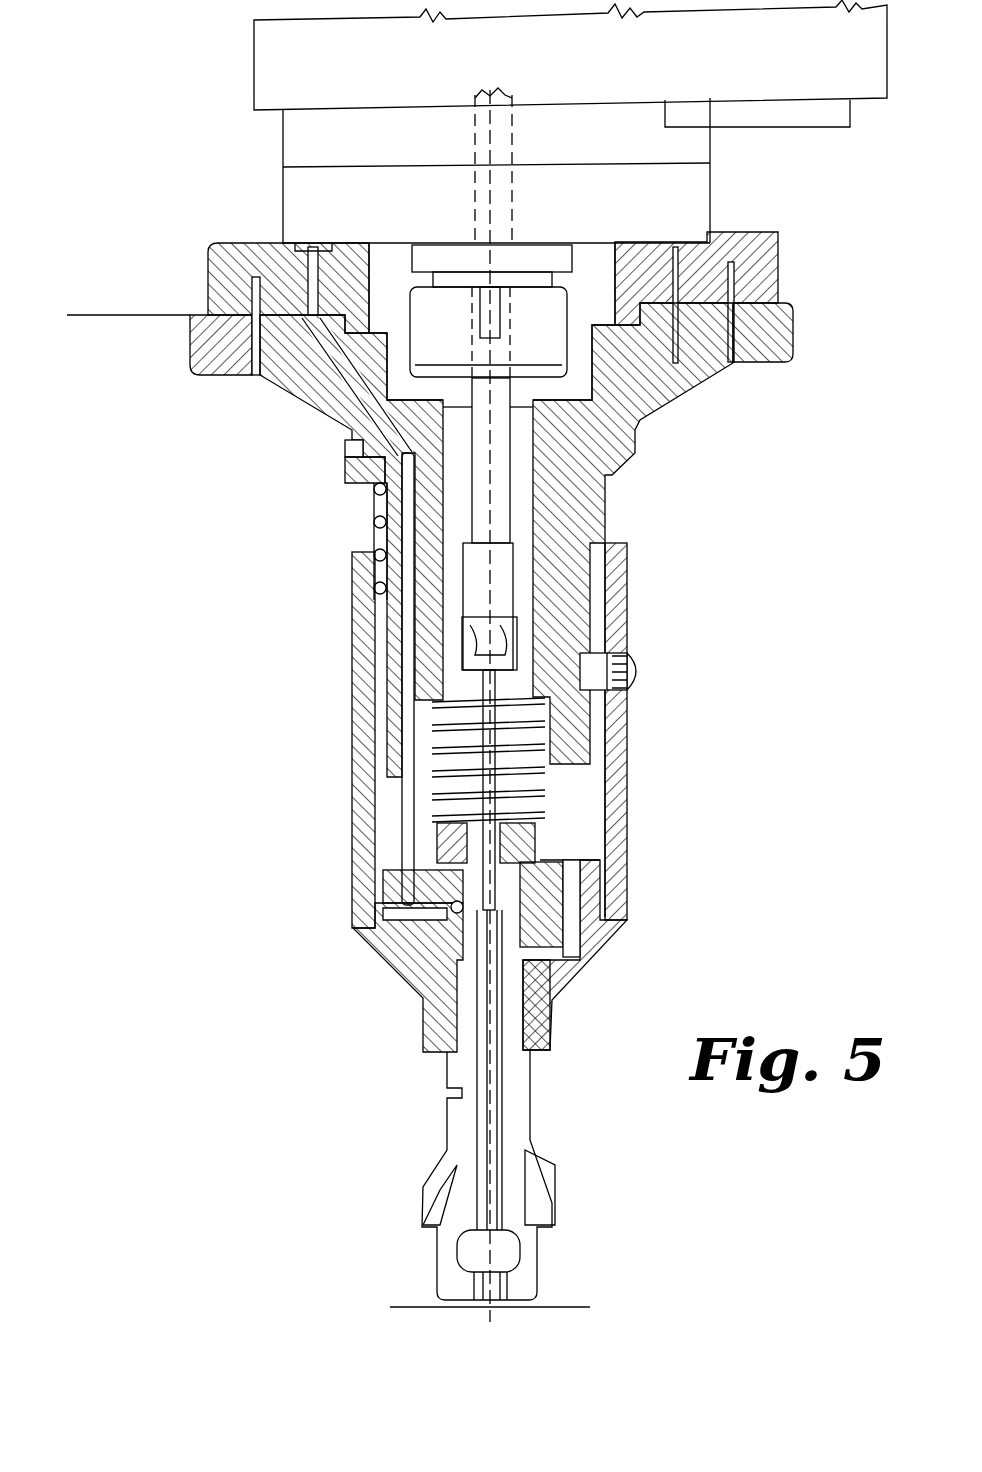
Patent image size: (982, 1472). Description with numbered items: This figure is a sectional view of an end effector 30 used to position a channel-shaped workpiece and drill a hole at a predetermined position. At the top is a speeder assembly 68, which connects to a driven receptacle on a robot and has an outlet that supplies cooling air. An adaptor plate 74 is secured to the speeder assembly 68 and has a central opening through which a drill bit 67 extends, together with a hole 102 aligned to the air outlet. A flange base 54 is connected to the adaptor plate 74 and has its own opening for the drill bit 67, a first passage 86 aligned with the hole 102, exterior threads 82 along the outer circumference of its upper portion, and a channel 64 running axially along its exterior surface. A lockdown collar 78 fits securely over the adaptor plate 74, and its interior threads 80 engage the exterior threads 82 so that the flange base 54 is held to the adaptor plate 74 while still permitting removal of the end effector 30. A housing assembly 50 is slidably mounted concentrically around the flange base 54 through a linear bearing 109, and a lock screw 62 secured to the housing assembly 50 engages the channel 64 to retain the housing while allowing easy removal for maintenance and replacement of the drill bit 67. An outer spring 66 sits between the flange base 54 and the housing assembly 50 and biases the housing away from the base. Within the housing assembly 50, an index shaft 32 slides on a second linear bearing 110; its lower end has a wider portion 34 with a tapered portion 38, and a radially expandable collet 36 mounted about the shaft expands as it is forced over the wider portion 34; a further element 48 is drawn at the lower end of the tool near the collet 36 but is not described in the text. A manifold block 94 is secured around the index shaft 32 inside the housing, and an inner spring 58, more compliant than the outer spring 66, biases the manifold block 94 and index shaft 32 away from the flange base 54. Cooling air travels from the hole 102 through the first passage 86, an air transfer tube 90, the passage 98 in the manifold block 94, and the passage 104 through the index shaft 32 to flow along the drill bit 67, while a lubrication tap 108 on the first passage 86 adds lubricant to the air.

The end effector 30 is at (148, 378).
The index shaft 32 is at (525, 1148).
The wider portion 34 is at (540, 1248).
The collet 36 is at (435, 1160).
The tapered portion 38 is at (555, 1195).
The port 48 is at (420, 1208).
The housing assembly 50 is at (625, 913).
The flange base 54 is at (640, 452).
The inner spring 58 is at (550, 793).
The lock screw 62 is at (645, 662).
The channel 64 is at (617, 598).
The outer spring 66 is at (608, 515).
The drill bit 67 is at (458, 1250).
The speeder assembly 68 is at (248, 160).
The adaptor plate 74 is at (783, 287).
The lockdown collar 78 is at (797, 340).
The interior threads 80 is at (737, 345).
The exterior threads 82 is at (735, 358).
The first passage 86 is at (352, 408).
The air transfer tube 90 is at (397, 825).
The manifold block 94 is at (377, 870).
The passage 98 is at (382, 933).
The hole 102 is at (277, 268).
The passage 104 is at (423, 995).
The lubrication tap 108 is at (345, 455).
The linear bearing 109 is at (375, 697).
The second linear bearing 110 is at (585, 960).